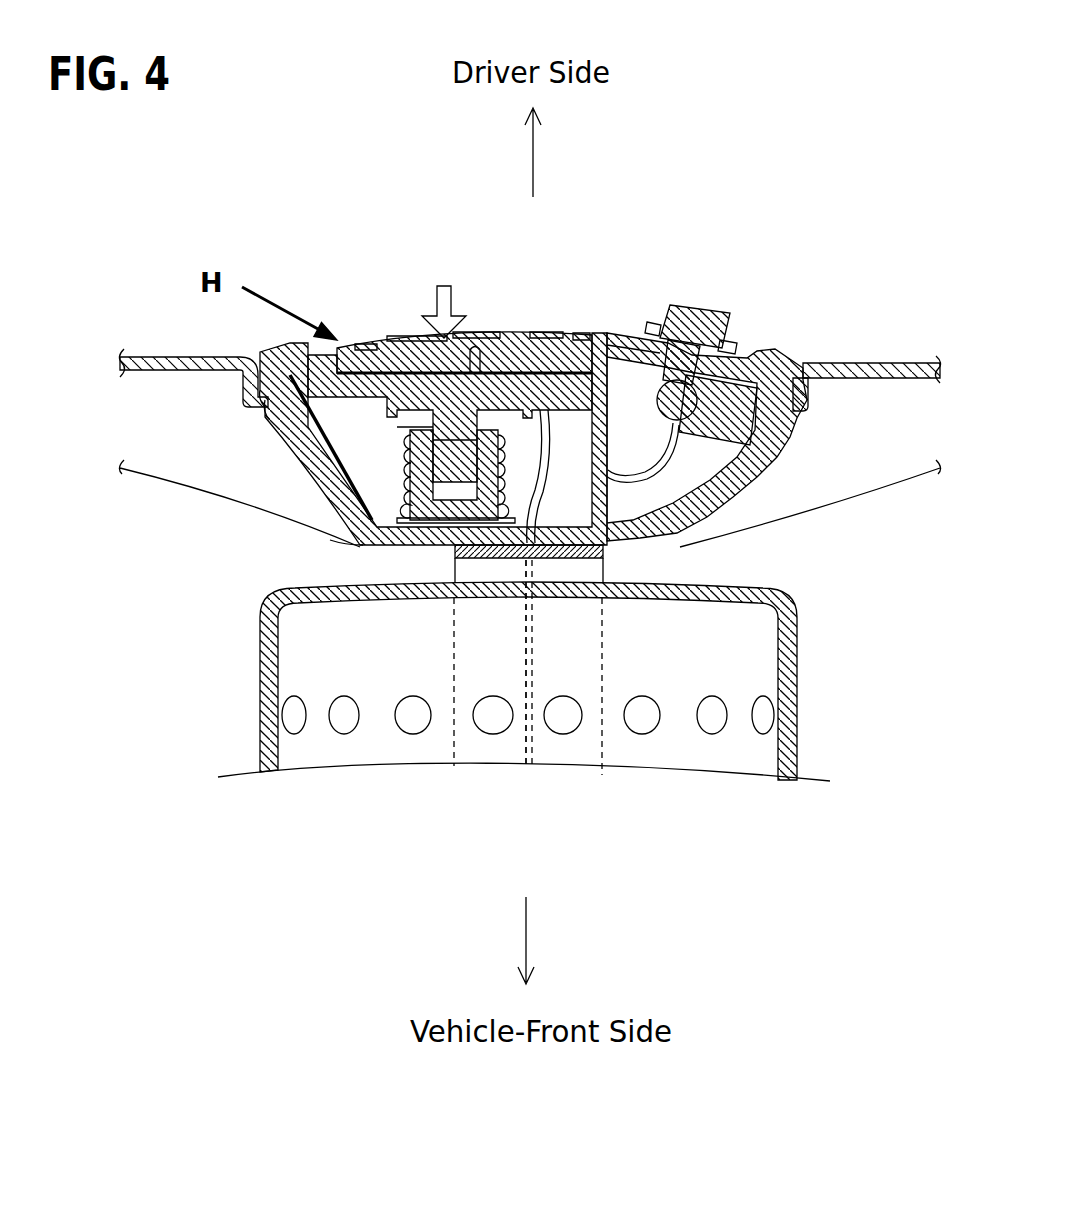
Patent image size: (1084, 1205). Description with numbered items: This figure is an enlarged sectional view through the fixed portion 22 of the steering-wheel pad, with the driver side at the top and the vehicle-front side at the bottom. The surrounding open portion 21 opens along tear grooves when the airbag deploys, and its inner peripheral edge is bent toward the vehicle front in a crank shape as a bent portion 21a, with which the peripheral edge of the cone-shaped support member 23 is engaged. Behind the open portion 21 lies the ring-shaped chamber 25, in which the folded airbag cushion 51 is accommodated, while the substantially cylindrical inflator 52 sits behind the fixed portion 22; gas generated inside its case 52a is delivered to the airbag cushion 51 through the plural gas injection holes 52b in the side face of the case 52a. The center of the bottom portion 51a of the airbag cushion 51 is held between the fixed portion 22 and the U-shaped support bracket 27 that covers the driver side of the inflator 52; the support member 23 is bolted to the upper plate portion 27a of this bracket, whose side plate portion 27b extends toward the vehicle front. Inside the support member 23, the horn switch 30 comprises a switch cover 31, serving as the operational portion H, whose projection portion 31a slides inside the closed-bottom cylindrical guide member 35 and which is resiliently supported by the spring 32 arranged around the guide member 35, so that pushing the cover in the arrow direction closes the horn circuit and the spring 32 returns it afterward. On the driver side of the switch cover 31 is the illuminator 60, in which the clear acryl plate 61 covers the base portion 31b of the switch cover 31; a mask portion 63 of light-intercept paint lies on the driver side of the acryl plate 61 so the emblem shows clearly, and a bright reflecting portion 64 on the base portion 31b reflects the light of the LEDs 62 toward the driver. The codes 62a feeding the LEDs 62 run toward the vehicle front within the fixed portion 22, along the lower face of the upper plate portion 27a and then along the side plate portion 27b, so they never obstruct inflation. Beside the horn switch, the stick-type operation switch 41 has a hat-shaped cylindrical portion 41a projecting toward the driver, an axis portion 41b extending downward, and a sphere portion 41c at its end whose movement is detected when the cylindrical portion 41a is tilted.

The open portion 21 is at (862, 357).
The bent portion 21a is at (810, 406).
The fixed portion 22 is at (529, 367).
The support member 23 is at (787, 462).
The chamber 25 is at (175, 579).
The support bracket 27 is at (450, 667).
The upper plate portion 27a is at (607, 560).
The side plate portion 27b is at (598, 647).
The horn switch 30 is at (378, 373).
The switch cover 31 is at (324, 416).
The projection portion 31a is at (470, 441).
The base portion 31b is at (300, 400).
The spring 32 is at (400, 480).
The guide member 35 is at (410, 431).
The operation switch 41 is at (681, 292).
The cylindrical portion 41a is at (742, 322).
The axis portion 41b is at (650, 345).
The sphere portion 41c is at (670, 430).
The airbag cushion 51 is at (194, 505).
The bottom portion 51a is at (330, 540).
The inflator 52 is at (573, 709).
The case 52a is at (782, 665).
The gas injection holes 52b is at (486, 728).
The illuminator 60 is at (455, 369).
The acryl plate 61 is at (555, 337).
The LEDs 62 is at (500, 336).
The codes 62a is at (545, 470).
The mask portion 63 is at (366, 344).
The reflecting portion 64 is at (405, 340).